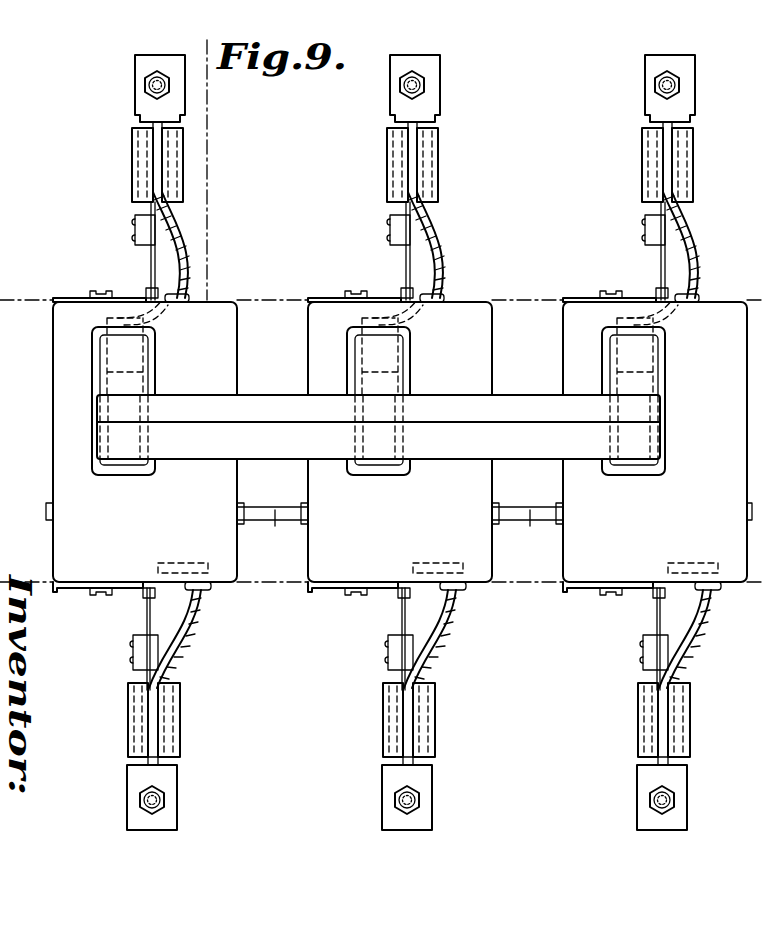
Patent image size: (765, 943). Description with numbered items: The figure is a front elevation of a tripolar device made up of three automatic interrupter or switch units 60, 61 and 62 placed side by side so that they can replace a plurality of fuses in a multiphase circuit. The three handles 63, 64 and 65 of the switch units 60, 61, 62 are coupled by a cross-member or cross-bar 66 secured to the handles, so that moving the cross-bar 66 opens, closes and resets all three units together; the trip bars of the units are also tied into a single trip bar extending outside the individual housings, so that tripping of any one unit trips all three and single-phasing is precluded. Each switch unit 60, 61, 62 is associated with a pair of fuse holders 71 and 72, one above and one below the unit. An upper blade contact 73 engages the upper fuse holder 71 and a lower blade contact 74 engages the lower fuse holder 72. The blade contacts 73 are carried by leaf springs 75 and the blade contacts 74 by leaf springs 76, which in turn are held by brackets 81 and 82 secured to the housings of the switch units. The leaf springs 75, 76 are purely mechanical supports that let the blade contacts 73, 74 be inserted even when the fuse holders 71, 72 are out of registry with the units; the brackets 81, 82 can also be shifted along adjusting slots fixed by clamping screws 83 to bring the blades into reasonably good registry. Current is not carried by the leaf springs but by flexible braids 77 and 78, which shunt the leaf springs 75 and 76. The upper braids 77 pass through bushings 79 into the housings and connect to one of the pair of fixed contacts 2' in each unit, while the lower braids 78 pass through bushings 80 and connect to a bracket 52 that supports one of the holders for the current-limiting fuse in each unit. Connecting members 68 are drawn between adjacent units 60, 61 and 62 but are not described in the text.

The fixed contact 2' is at (369, 373).
The bracket 52 is at (173, 568).
The switch unit 60 is at (736, 259).
The switch unit 61 is at (481, 259).
The switch unit 62 is at (226, 259).
The handle 63 is at (627, 386).
The handle 64 is at (372, 386).
The handle 65 is at (116, 384).
The cross-bar 66 is at (262, 400).
The tie rod connector 68 is at (275, 526).
The fuse holder 71 is at (173, 158).
The fuse holder 72 is at (173, 717).
The blade contact 73 is at (150, 156).
The blade contact 74 is at (146, 720).
The leaf spring 75 is at (151, 268).
The leaf spring 76 is at (147, 621).
The braid 77 is at (182, 255).
The braid 78 is at (186, 628).
The bushing 79 is at (189, 300).
The bushing 80 is at (205, 590).
The bracket 81 is at (53, 299).
The bracket 82 is at (70, 588).
The clamping screw 83 is at (93, 291).